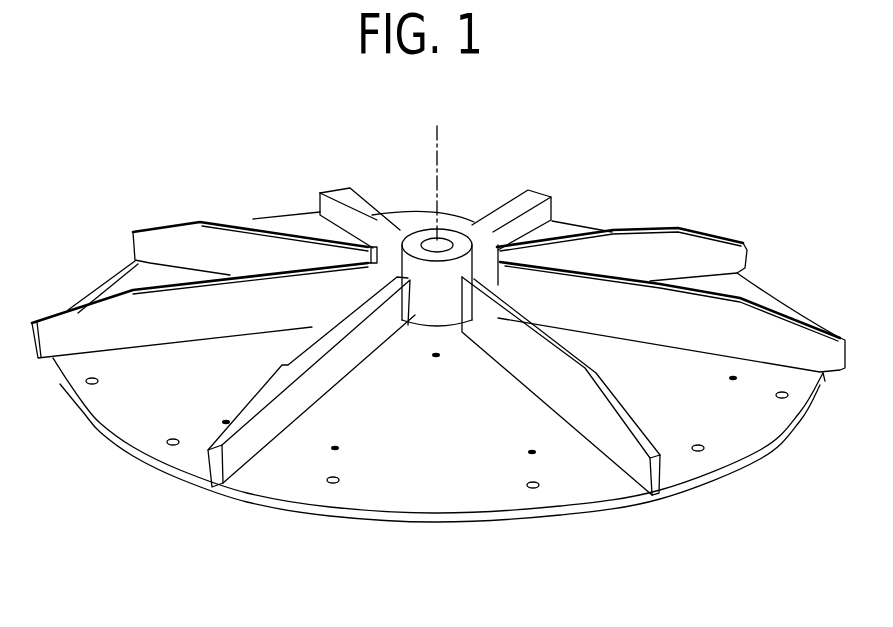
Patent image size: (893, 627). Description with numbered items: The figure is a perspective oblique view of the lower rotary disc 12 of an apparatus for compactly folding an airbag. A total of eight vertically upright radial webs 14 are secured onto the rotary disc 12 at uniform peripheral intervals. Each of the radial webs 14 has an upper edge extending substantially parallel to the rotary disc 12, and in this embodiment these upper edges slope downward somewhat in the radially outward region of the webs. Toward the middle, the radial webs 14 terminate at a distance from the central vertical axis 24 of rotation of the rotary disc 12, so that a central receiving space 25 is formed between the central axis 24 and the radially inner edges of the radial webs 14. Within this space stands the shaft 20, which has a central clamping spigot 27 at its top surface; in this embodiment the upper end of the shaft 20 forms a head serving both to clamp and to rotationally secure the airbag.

The lower rotary disc 12 is at (737, 438).
The radial webs 14 is at (186, 244).
The shaft 20 is at (428, 308).
The central vertical axis 24 is at (440, 176).
The central receiving space 25 is at (551, 198).
The central clamping spigot 27 is at (386, 220).